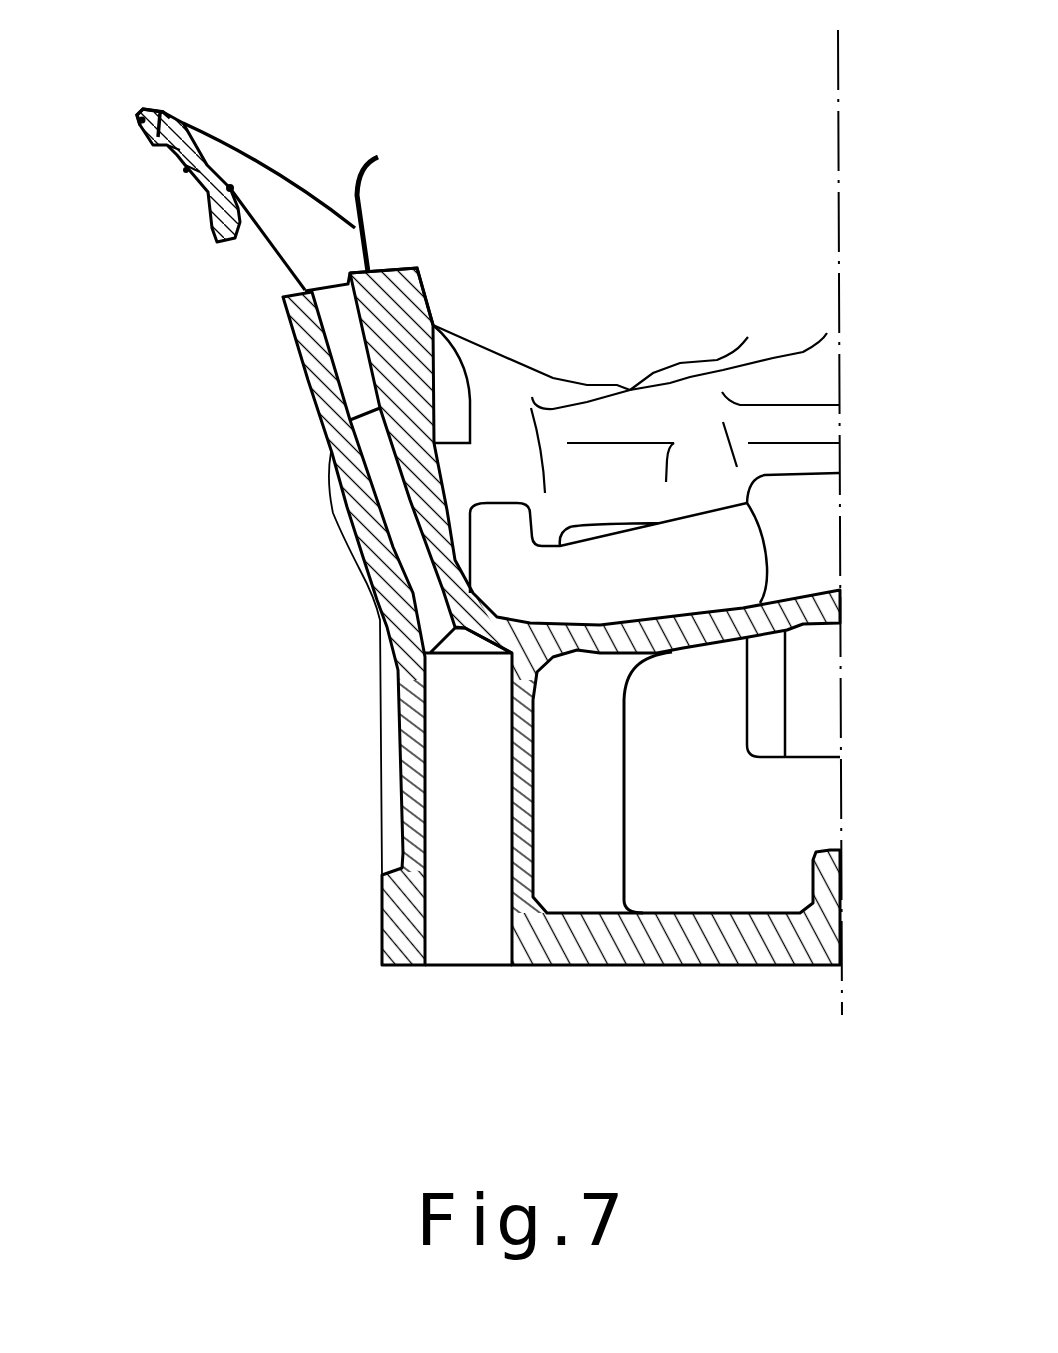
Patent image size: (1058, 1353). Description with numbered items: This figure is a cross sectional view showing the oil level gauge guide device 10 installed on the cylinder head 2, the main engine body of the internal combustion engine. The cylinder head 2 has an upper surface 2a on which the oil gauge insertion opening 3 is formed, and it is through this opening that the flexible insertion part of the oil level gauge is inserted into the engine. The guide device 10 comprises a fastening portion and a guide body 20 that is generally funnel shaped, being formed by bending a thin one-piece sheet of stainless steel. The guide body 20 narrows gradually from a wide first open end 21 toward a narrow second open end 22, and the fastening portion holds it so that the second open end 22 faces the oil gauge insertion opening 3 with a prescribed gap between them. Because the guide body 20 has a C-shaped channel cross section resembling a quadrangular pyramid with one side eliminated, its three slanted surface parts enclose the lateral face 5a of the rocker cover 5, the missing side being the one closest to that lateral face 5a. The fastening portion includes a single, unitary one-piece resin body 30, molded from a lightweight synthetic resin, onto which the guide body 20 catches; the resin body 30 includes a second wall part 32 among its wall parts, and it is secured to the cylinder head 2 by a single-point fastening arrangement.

The cylinder head 2 is at (350, 615).
The upper surface of the cylinder head 2a is at (418, 268).
The oil gauge insertion opening 3 is at (357, 246).
The rocker cover 5 is at (387, 174).
The lateral face of the rocker cover 5a is at (353, 206).
The oil level gauge guide device 10 is at (147, 148).
The guide body 20 is at (150, 100).
The first open end 21 is at (337, 260).
The second open end 22 is at (253, 157).
The resin body 30 is at (162, 199).
The second wall part 32 is at (207, 200).